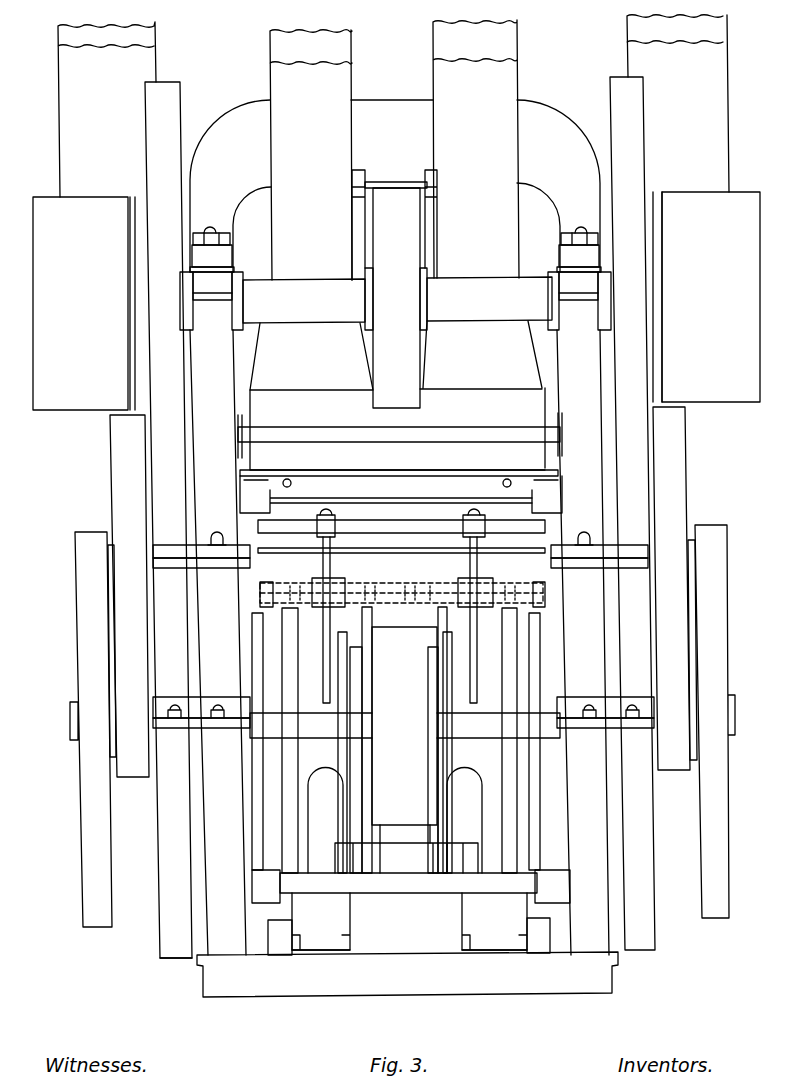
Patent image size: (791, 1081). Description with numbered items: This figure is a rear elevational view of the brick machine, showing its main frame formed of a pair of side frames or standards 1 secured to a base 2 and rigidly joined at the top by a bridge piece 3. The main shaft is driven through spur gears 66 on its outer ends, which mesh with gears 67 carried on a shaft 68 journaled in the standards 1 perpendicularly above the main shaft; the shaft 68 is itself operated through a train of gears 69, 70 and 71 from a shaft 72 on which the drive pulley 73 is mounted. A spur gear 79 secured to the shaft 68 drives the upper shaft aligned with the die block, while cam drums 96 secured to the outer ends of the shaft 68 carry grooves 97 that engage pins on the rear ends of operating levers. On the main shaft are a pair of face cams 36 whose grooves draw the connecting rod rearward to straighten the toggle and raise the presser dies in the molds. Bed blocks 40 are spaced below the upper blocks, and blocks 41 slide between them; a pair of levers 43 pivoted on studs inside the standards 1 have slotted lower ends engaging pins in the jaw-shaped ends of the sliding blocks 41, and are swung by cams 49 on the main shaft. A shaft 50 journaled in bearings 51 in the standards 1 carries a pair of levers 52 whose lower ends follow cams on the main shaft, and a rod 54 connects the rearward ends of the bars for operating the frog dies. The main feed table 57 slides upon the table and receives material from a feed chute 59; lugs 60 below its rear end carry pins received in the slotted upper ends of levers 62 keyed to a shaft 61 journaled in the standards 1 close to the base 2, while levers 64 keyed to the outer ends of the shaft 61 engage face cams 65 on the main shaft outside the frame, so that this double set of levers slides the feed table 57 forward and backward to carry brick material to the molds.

The side frames or standards 1 is at (208, 455).
The base 2 is at (620, 962).
The bridge piece 3 is at (555, 123).
The face cams 36 is at (437, 858).
The bed blocks 40 is at (288, 948).
The sliding blocks 41 is at (278, 917).
The levers 43 is at (257, 848).
The cams 49 is at (302, 860).
The shaft 50 is at (360, 595).
The bearings 51 is at (268, 588).
The levers 52 is at (332, 670).
The rod 54 is at (533, 525).
The main feed table 57 is at (500, 467).
The feed chute 59 is at (268, 388).
The lugs 60 is at (268, 502).
The shaft 61 is at (347, 887).
The levers 62 is at (257, 812).
The levers 64 is at (200, 799).
The face cams 65 is at (190, 813).
The spur gears 66 is at (173, 948).
The gears 67 is at (165, 110).
The shaft 68 is at (305, 290).
The gear 69 is at (158, 565).
The gear 70 is at (125, 598).
The gear 71 is at (132, 762).
The shaft 72 is at (535, 727).
The drive pulley 73 is at (382, 812).
The spur gear 79 is at (398, 207).
The cam drums 96 is at (738, 200).
The grooves 97 is at (130, 215).